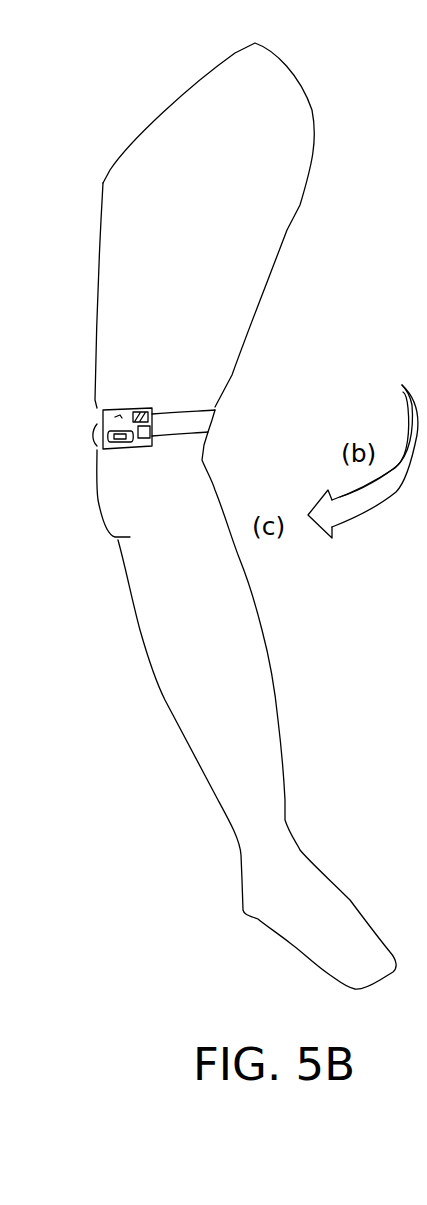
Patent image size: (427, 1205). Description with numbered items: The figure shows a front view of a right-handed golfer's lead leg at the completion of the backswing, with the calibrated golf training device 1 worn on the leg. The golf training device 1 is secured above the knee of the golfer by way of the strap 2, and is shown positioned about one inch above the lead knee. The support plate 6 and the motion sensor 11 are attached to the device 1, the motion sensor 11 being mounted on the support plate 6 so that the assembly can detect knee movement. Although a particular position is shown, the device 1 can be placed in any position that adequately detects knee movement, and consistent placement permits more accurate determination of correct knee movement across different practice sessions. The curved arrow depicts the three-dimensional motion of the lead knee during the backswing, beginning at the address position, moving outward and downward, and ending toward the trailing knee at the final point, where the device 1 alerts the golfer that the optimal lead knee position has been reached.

The golf training device 1 is at (147, 428).
The strap 2 is at (272, 401).
The support plate 6 is at (133, 408).
The motion sensor 11 is at (133, 450).